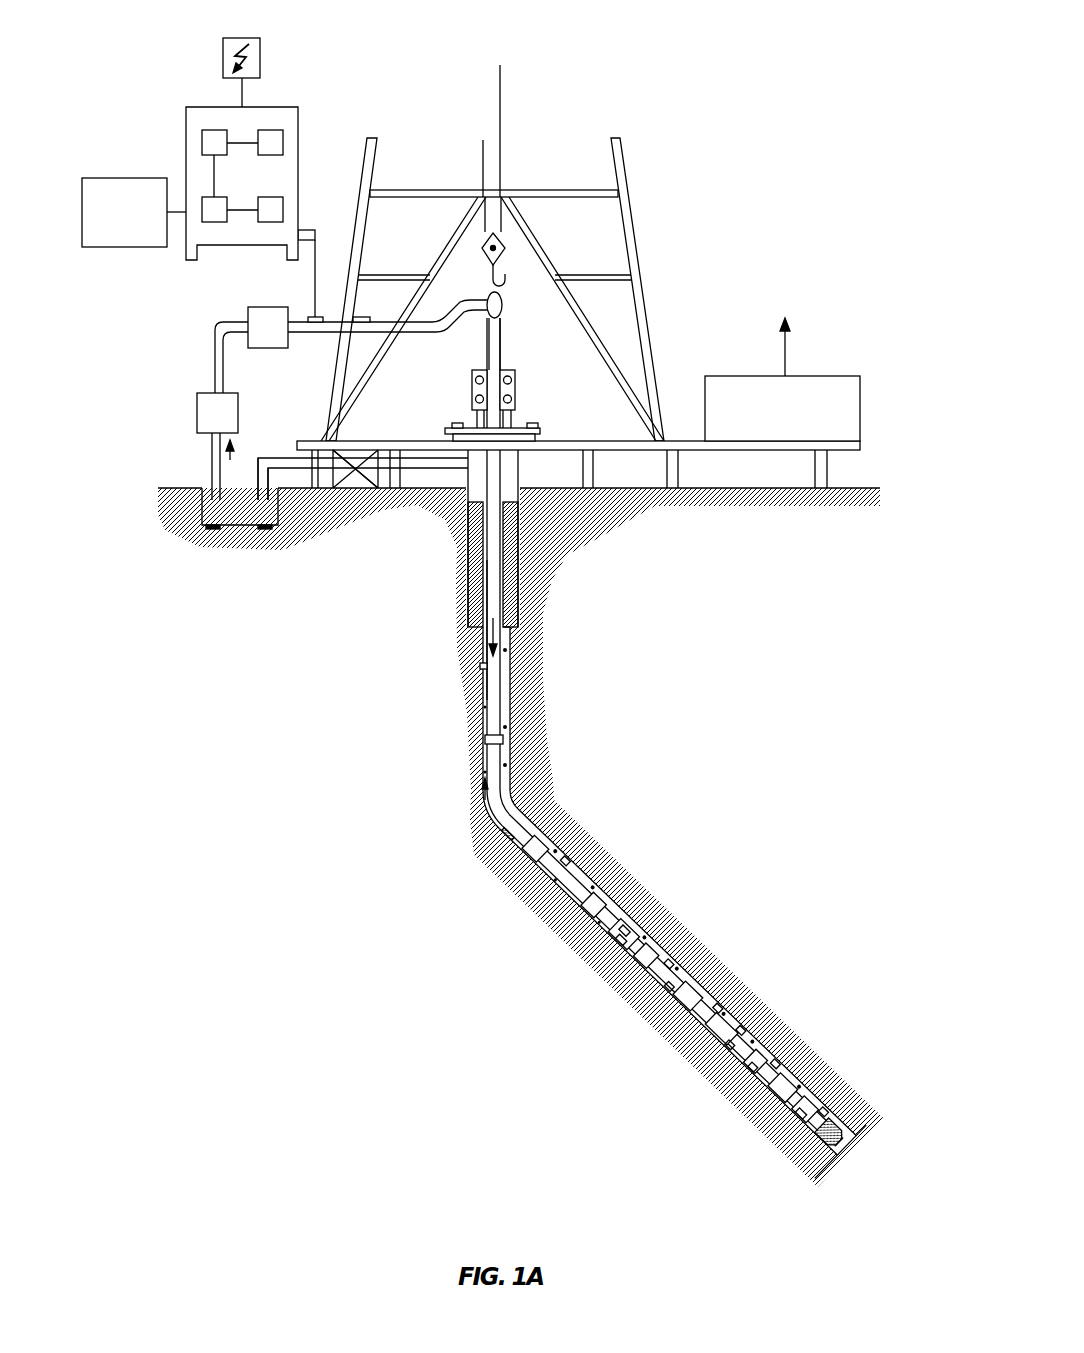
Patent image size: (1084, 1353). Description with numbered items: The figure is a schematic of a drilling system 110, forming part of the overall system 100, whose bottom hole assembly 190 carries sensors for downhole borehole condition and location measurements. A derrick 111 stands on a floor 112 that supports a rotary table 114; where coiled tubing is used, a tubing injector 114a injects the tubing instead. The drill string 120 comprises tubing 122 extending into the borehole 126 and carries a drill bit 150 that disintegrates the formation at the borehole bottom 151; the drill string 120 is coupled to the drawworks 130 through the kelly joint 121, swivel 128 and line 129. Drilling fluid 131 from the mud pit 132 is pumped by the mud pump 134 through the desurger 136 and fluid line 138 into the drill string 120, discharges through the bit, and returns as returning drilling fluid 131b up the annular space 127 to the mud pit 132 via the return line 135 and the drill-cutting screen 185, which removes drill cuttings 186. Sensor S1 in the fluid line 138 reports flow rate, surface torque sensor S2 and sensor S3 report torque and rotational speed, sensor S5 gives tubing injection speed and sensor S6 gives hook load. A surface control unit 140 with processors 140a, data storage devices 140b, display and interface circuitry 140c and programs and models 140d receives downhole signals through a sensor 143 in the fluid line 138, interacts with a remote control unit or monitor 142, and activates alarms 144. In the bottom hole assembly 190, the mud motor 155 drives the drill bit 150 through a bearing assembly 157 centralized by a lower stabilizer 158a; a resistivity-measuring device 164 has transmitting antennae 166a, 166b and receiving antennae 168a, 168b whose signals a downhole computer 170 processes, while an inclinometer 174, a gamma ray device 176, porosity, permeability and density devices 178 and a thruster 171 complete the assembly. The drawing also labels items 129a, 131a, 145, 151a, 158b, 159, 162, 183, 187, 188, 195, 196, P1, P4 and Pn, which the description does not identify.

The system 100 is at (412, 103).
The drilling system 110 is at (578, 271).
The derrick 111 is at (644, 287).
The floor 112 is at (673, 436).
The rotary table 114 is at (518, 426).
The tubing injector 114a is at (516, 385).
The drill string 120 is at (512, 700).
The kelly joint 121 is at (501, 358).
The tubing 122 is at (487, 700).
The borehole 126 is at (515, 793).
The annular space 127 is at (530, 808).
The swivel 128 is at (488, 314).
The line 129 is at (502, 163).
The drill string lower section 129a is at (668, 940).
The drawworks 130 is at (827, 376).
The drilling fluid 131 is at (212, 512).
The drilling fluid downflow 131a is at (492, 618).
The returning drilling fluid 131b is at (483, 800).
The mud pit 132 is at (240, 525).
The mud pump 134 is at (212, 403).
The return line 135 is at (420, 482).
The desurger 136 is at (255, 307).
The fluid line 138 is at (317, 335).
The surface control unit 140 is at (245, 157).
The processor 140a is at (208, 130).
The data storage device 140b is at (208, 197).
The display units and interface circuitry 140c is at (277, 193).
The computer programs and models 140d is at (283, 140).
The remote control unit 142 is at (243, 37).
The sensor 143 is at (308, 317).
The alarm 144 is at (120, 248).
The communication link 145 is at (310, 230).
The drill bit 150 is at (862, 1116).
The borehole bottom 151 is at (812, 1183).
The bit face 151a is at (843, 1142).
The downhole motor 155 is at (573, 875).
The bearing assembly 157 is at (806, 1080).
The lower stabilizer 158a is at (790, 1080).
The stabilizer 158b is at (613, 943).
The sensor 159 is at (797, 1100).
The drill collar 162 is at (635, 930).
The resistivity-measuring device 164 is at (715, 1022).
The transmitting antenna 166a is at (622, 947).
The transmitting antenna 166b is at (727, 1047).
The receiving antenna 168a is at (690, 990).
The receiving antenna 168b is at (718, 1005).
The downhole computer 170 is at (523, 842).
The thruster 171 is at (755, 1070).
The inclinometer 174 is at (743, 1028).
The gamma ray device 176 is at (762, 1053).
The formation porosity, permeability and density measuring devices 178 is at (510, 830).
The telemetry unit 183 is at (653, 967).
The drill-cutting screen 185 is at (350, 448).
The drill cuttings 186 is at (504, 765).
The casing 187 is at (518, 597).
The sensor 188 is at (776, 1060).
The bottom hole assembly 190 is at (656, 1008).
The formation 195 is at (798, 872).
The formation fluid 196 is at (710, 1170).
The pressure sensor P1 is at (825, 1110).
The pressure sensor P4 is at (568, 862).
The pressure sensor Pn is at (480, 662).
The flow rate sensor S1 is at (363, 317).
The surface torque sensor S2 is at (539, 426).
The rotational speed sensor S3 is at (457, 422).
The tubing injection speed sensor S5 is at (502, 312).
The hook load sensor S6 is at (490, 277).